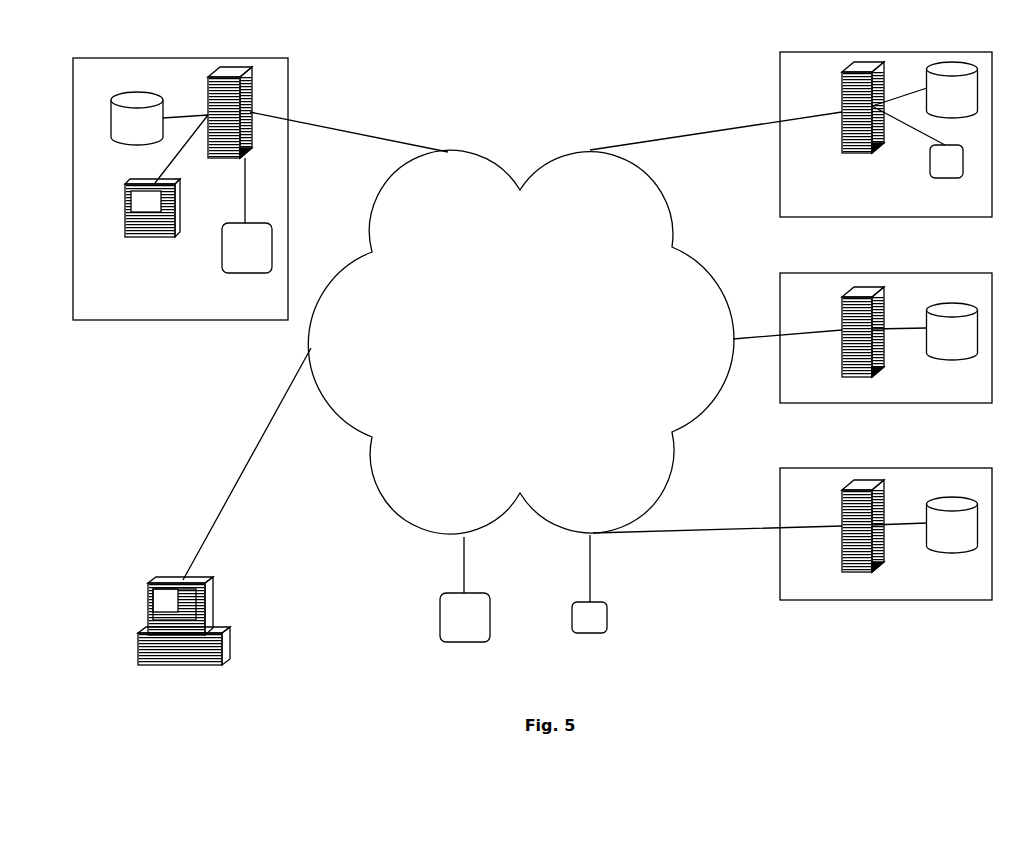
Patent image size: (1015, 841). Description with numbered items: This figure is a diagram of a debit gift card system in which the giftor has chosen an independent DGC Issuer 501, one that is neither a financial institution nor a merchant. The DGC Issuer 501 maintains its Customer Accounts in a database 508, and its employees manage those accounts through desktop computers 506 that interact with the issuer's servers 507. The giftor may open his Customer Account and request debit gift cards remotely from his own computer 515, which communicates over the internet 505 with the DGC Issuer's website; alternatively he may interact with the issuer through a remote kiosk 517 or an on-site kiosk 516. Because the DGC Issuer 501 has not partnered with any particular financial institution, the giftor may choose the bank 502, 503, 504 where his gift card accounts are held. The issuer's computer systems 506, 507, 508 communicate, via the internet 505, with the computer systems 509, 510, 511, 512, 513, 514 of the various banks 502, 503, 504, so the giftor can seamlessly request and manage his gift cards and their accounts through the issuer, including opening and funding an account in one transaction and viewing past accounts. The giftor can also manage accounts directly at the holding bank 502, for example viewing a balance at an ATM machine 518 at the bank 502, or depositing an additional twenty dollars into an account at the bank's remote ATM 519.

The DGC Issuer 501 is at (180, 176).
The bank 502 is at (886, 122).
The bank 503 is at (886, 325).
The bank 504 is at (886, 521).
The internet 505 is at (521, 331).
The desktop computer 506 is at (152, 217).
The server 507 is at (230, 121).
The database 508 is at (137, 118).
The bank computer system 509 is at (863, 116).
The bank computer system 510 is at (952, 90).
The bank computer system 511 is at (863, 341).
The bank computer system 512 is at (952, 331).
The bank computer system 513 is at (863, 535).
The bank computer system 514 is at (952, 525).
The giftor's computer 515 is at (184, 631).
The on-site kiosk 516 is at (247, 257).
The remote kiosk 517 is at (465, 626).
The ATM machine 518 is at (947, 170).
The remote ATM 519 is at (589, 625).